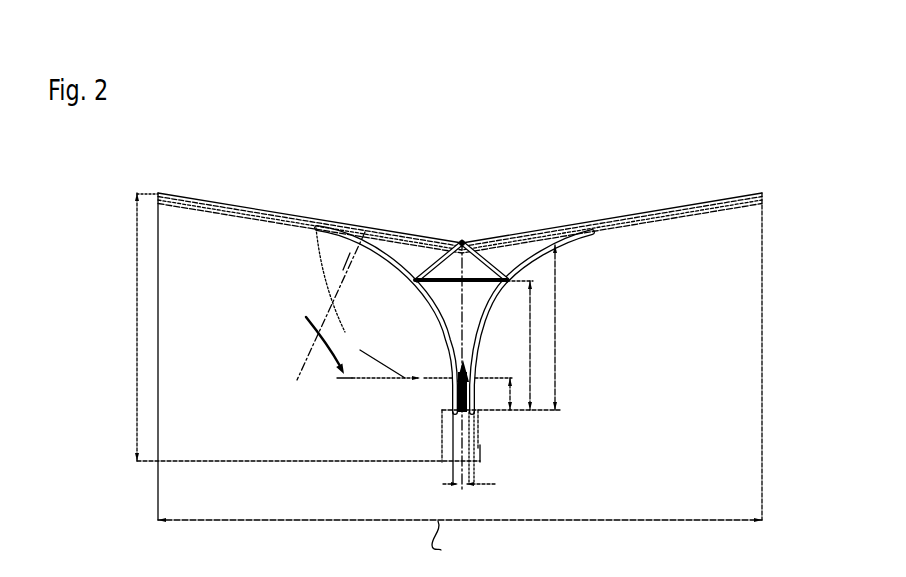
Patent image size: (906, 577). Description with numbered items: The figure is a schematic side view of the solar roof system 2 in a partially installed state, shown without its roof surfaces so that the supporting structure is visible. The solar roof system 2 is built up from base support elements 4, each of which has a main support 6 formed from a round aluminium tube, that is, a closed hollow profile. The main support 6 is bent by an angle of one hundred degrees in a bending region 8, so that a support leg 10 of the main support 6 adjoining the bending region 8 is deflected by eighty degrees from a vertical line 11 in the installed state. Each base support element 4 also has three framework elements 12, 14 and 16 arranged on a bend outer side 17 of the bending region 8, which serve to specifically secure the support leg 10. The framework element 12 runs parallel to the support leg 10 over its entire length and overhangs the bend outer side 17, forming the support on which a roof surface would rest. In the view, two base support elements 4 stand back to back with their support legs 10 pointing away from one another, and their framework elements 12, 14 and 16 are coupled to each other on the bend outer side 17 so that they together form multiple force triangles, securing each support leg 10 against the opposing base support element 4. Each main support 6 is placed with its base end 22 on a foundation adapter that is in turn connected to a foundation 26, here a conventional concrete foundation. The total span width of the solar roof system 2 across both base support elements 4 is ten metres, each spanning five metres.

The solar roof system 2 is at (345, 140).
The base support element 4 is at (389, 337).
The main support 6 is at (408, 277).
The bending region 8 is at (333, 349).
The support leg 10 is at (196, 207).
The vertical line 11 is at (462, 243).
The framework element 12 is at (400, 238).
The framework element 14 is at (424, 262).
The framework element 16 is at (461, 243).
The bend outer side 17 is at (462, 312).
The base end 22 is at (437, 400).
The foundation 26 is at (480, 445).